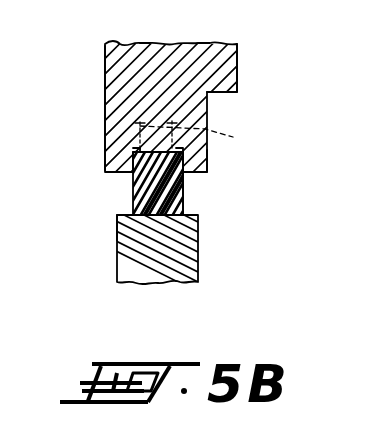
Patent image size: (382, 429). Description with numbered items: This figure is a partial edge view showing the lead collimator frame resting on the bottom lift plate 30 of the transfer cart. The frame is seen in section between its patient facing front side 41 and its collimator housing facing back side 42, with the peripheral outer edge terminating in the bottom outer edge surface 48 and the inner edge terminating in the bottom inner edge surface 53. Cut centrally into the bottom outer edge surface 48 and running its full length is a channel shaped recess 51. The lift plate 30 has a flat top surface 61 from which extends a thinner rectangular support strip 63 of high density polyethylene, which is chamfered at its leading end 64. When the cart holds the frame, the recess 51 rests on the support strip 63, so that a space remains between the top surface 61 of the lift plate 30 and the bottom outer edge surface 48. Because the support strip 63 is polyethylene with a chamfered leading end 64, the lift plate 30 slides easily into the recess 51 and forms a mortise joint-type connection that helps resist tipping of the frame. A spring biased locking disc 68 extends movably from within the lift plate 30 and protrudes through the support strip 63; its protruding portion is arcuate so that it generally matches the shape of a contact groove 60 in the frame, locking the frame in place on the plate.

The lift plate 30 is at (198, 258).
The front side 41 is at (236, 61).
The back side 42 is at (105, 63).
The bottom outer edge surface 48 is at (207, 174).
The recess 51 is at (207, 165).
The bottom inner edge surface 53 is at (232, 93).
The contact groove 60 is at (138, 125).
The top surface 61 is at (117, 215).
The support strip 63 is at (183, 190).
The leading end 64 is at (140, 132).
The locking disc 68 is at (202, 135).